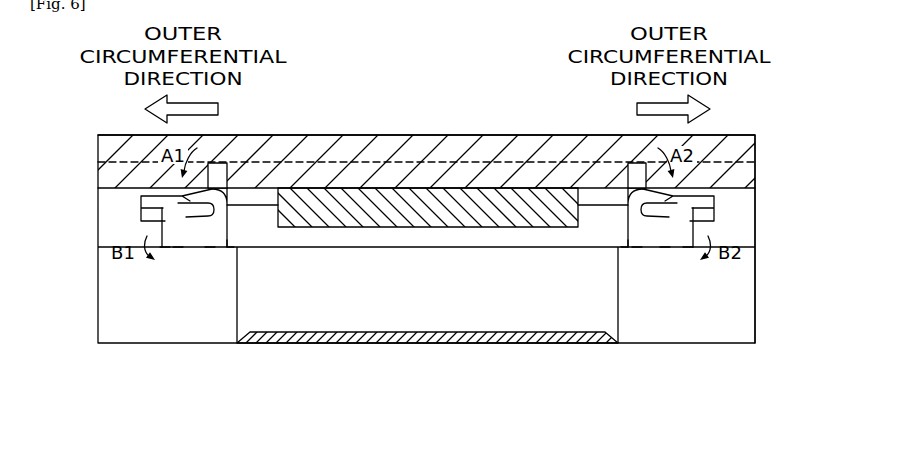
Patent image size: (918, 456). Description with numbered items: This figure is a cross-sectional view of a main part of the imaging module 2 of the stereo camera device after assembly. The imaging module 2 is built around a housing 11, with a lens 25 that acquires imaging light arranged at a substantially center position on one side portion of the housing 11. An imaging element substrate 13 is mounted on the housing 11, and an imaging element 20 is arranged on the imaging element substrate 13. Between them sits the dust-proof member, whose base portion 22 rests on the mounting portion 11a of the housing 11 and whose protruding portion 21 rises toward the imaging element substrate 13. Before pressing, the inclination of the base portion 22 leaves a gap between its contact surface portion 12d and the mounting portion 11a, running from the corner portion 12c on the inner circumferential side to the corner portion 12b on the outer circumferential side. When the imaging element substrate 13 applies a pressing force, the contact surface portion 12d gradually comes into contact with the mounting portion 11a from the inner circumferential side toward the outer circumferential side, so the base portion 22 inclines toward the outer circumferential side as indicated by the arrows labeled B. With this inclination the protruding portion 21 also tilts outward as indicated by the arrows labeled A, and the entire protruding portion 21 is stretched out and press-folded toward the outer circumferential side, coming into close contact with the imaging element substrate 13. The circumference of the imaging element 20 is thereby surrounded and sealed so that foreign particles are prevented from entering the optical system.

The imaging module 2 is at (763, 89).
The housing 11 is at (733, 308).
The mounting portion 11a is at (210, 257).
The corner portion on the outer circumferential side 12b is at (165, 257).
The corner portion on the inner circumferential side 12c is at (240, 237).
The contact surface portion 12d is at (178, 257).
The imaging element substrate 13 is at (460, 150).
The imaging element 20 is at (367, 203).
The protruding portion 21 is at (186, 217).
The base portion 22 is at (197, 240).
The lens 25 is at (447, 337).